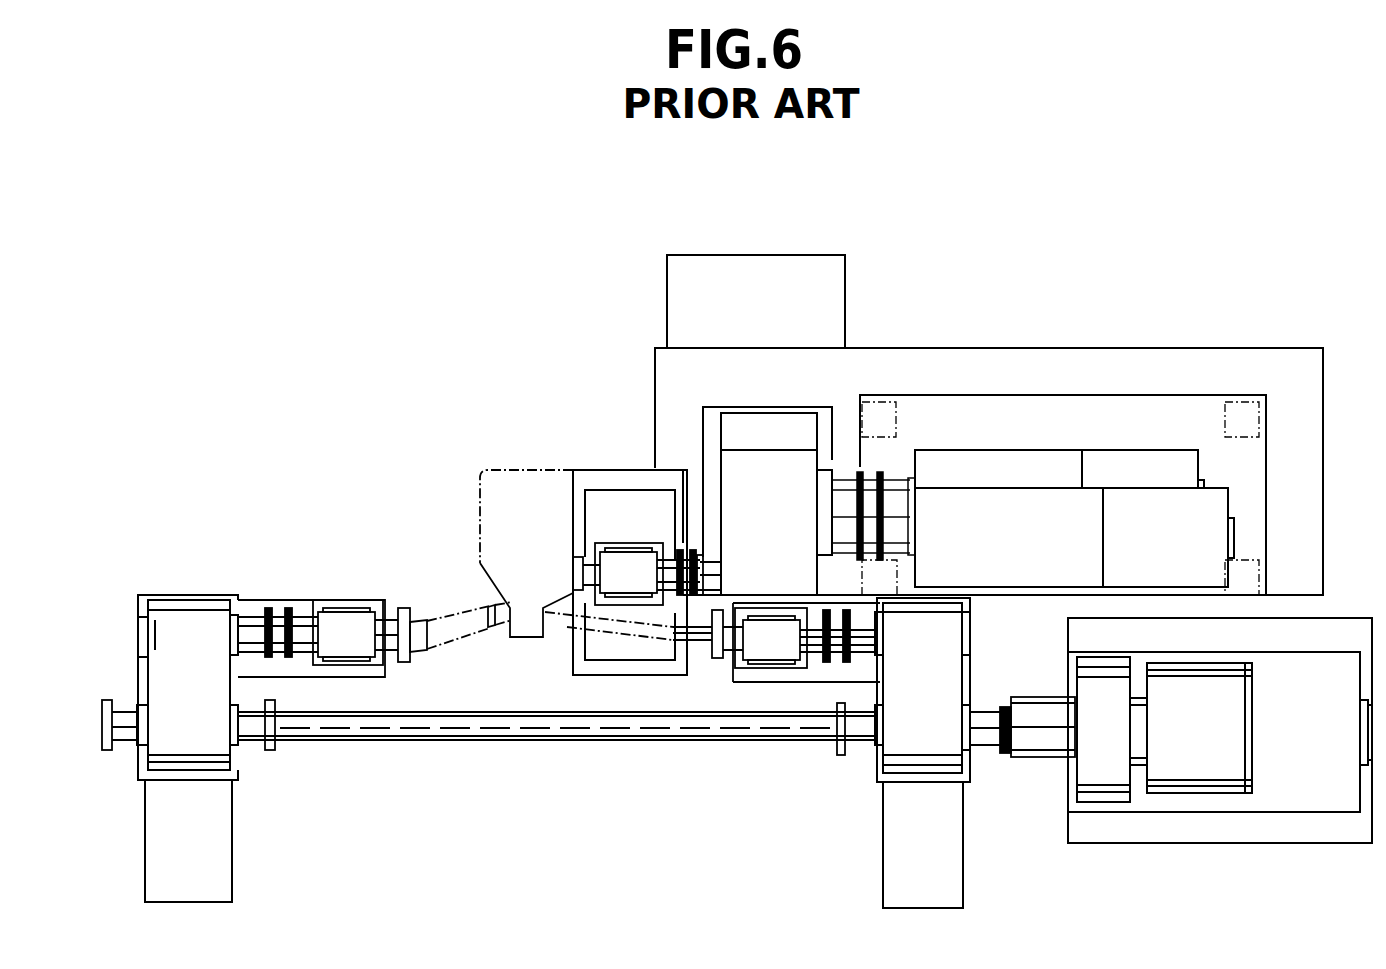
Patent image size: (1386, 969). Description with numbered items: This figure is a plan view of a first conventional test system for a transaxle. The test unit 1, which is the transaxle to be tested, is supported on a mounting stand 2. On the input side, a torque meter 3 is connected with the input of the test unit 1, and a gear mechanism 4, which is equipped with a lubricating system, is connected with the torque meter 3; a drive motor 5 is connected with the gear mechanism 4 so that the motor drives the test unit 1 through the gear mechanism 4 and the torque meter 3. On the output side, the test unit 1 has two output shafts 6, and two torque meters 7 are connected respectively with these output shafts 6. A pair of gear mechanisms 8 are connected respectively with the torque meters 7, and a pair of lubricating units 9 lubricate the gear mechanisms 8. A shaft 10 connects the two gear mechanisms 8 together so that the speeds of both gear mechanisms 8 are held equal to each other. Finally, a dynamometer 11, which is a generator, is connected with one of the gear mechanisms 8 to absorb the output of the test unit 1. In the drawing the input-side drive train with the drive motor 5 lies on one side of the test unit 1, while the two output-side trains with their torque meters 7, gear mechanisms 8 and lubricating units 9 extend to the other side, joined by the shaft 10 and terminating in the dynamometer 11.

The test unit 1 is at (478, 482).
The mounting stand 2 is at (630, 500).
The torque meter 3 is at (617, 567).
The gear mechanism 4 is at (793, 427).
The drive motor 5 is at (1147, 508).
The output shafts 6 is at (432, 628).
The torque meters 7 is at (343, 625).
The gear mechanisms 8 is at (215, 753).
The lubricating units 9 is at (218, 863).
The shaft 10 is at (517, 733).
The dynamometer 11 is at (1243, 828).